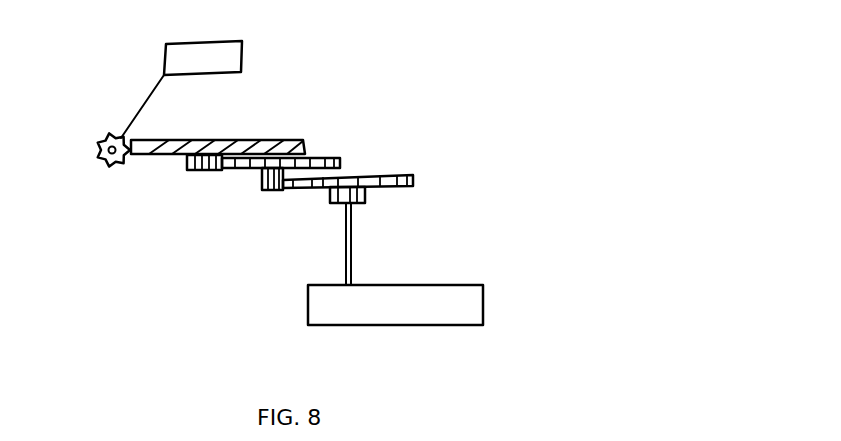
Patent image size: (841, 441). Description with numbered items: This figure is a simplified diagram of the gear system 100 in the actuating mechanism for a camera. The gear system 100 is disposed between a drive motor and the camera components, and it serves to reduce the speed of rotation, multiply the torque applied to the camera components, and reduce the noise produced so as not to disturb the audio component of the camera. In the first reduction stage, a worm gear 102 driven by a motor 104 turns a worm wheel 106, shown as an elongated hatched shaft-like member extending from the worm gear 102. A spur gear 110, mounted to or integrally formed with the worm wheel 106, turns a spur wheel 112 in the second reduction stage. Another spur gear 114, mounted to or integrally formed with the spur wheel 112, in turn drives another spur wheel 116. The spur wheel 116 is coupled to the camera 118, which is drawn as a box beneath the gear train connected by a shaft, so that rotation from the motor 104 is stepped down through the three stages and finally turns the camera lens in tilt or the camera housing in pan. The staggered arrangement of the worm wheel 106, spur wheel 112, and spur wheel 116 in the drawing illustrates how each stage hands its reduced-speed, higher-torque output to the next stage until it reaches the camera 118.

The gear system 100 is at (484, 81).
The worm gear 102 is at (106, 133).
The motor 104 is at (232, 42).
The worm wheel 106 is at (282, 140).
The spur gear 110 is at (196, 171).
The spur wheel 112 is at (251, 170).
The spur gear 114 is at (269, 191).
The spur wheel 116 is at (321, 190).
The camera 118 is at (457, 284).